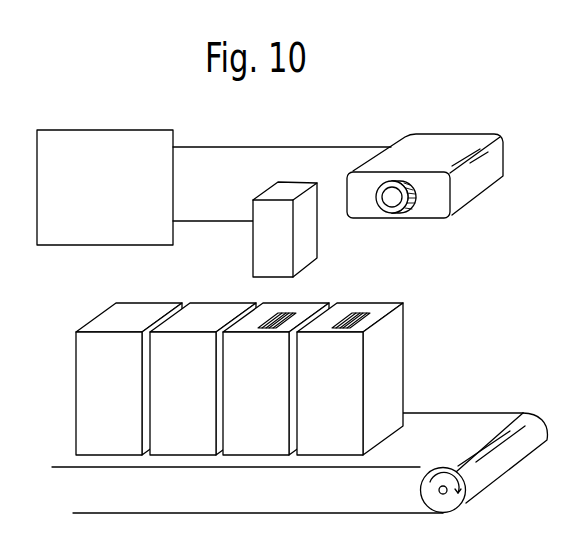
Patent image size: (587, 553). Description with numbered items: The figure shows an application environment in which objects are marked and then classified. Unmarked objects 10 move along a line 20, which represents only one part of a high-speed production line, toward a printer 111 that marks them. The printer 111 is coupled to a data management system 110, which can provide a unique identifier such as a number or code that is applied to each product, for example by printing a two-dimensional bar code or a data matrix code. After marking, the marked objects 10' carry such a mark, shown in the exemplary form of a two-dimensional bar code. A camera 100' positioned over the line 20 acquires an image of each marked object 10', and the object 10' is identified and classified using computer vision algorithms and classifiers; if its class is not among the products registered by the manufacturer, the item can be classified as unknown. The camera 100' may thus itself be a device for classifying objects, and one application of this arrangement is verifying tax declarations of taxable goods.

The data management system 110 is at (122, 200).
The printer 111 is at (319, 240).
The camera 100' is at (430, 204).
The unmarked objects 10 is at (166, 379).
The marked objects 10' is at (313, 379).
The line 20 is at (350, 503).